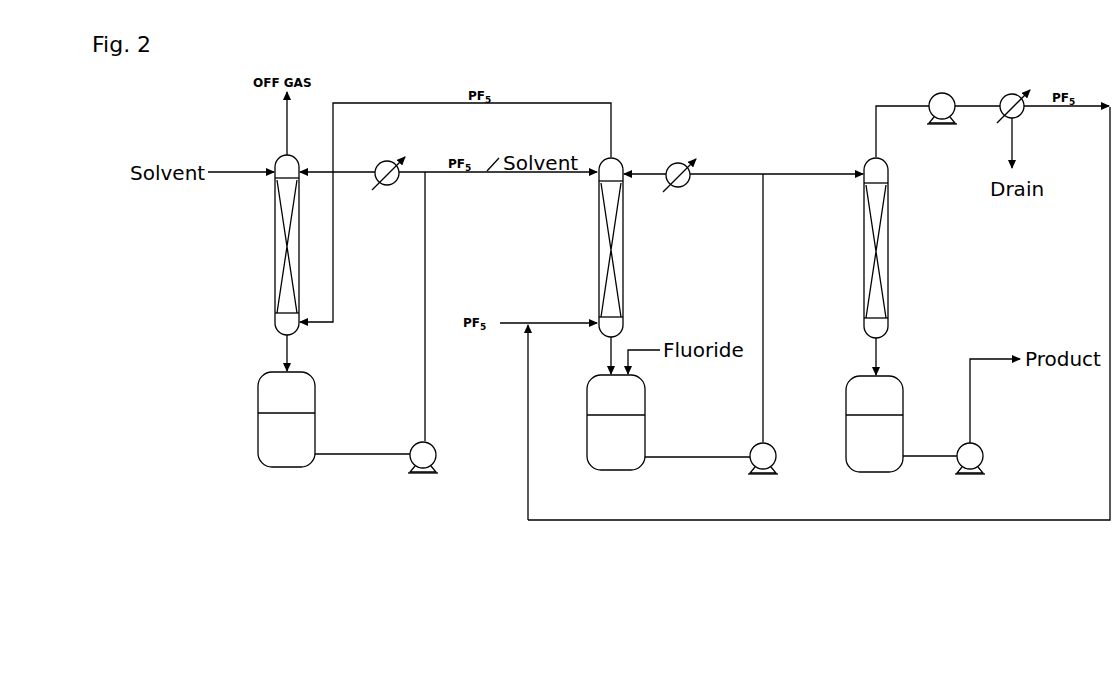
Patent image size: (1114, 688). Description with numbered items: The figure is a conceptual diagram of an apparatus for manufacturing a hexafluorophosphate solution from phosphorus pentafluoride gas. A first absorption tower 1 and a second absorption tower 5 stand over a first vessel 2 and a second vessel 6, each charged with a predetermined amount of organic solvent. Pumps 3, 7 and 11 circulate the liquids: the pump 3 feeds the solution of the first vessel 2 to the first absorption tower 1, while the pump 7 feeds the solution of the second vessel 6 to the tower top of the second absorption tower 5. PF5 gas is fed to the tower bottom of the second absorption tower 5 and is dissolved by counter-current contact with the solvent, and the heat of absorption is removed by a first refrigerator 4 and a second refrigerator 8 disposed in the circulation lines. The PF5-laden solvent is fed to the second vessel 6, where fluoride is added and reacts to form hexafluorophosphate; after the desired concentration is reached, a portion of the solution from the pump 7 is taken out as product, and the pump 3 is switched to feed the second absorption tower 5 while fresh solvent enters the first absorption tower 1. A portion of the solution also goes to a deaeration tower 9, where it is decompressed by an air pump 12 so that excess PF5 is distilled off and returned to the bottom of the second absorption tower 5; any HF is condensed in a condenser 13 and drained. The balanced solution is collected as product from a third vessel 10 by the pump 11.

The first absorption tower 1 is at (279, 239).
The first vessel 2 is at (258, 385).
The pump 3 is at (437, 456).
The first refrigerator 4 is at (377, 167).
The second absorption tower 5 is at (599, 240).
The second vessel 6 is at (587, 405).
The pump 7 is at (777, 458).
The second refrigerator 8 is at (667, 166).
The deaeration tower 9 is at (865, 240).
The third vessel 10 is at (846, 402).
The pump 11 is at (984, 459).
The air pump 12 is at (939, 92).
The condenser 13 is at (1007, 92).